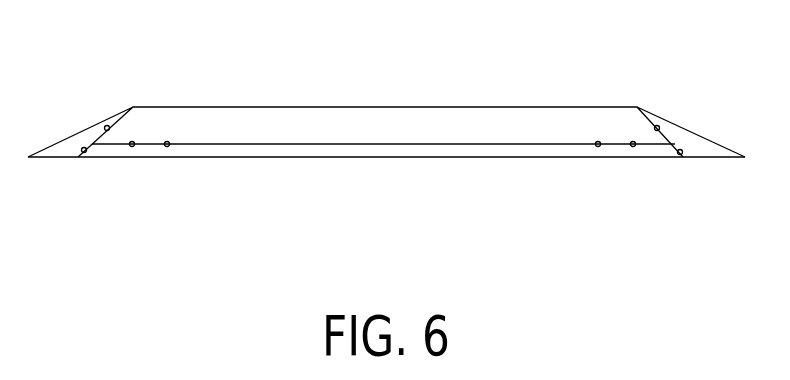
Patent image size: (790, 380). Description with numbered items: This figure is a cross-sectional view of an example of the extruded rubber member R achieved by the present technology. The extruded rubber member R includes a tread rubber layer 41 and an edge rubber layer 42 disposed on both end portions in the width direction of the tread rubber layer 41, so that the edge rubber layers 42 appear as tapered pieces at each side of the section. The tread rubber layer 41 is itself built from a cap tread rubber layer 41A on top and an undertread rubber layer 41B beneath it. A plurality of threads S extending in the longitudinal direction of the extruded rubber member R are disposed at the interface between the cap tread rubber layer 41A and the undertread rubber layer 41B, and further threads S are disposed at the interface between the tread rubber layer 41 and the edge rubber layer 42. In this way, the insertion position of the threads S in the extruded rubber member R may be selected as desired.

The tread rubber layer 41 is at (386, 96).
The cap tread rubber layer 41A is at (428, 118).
The undertread rubber layer 41B is at (453, 155).
The edge rubber layer 42 is at (68, 147).
The threads S is at (107, 125).
The extruded rubber member R is at (300, 107).